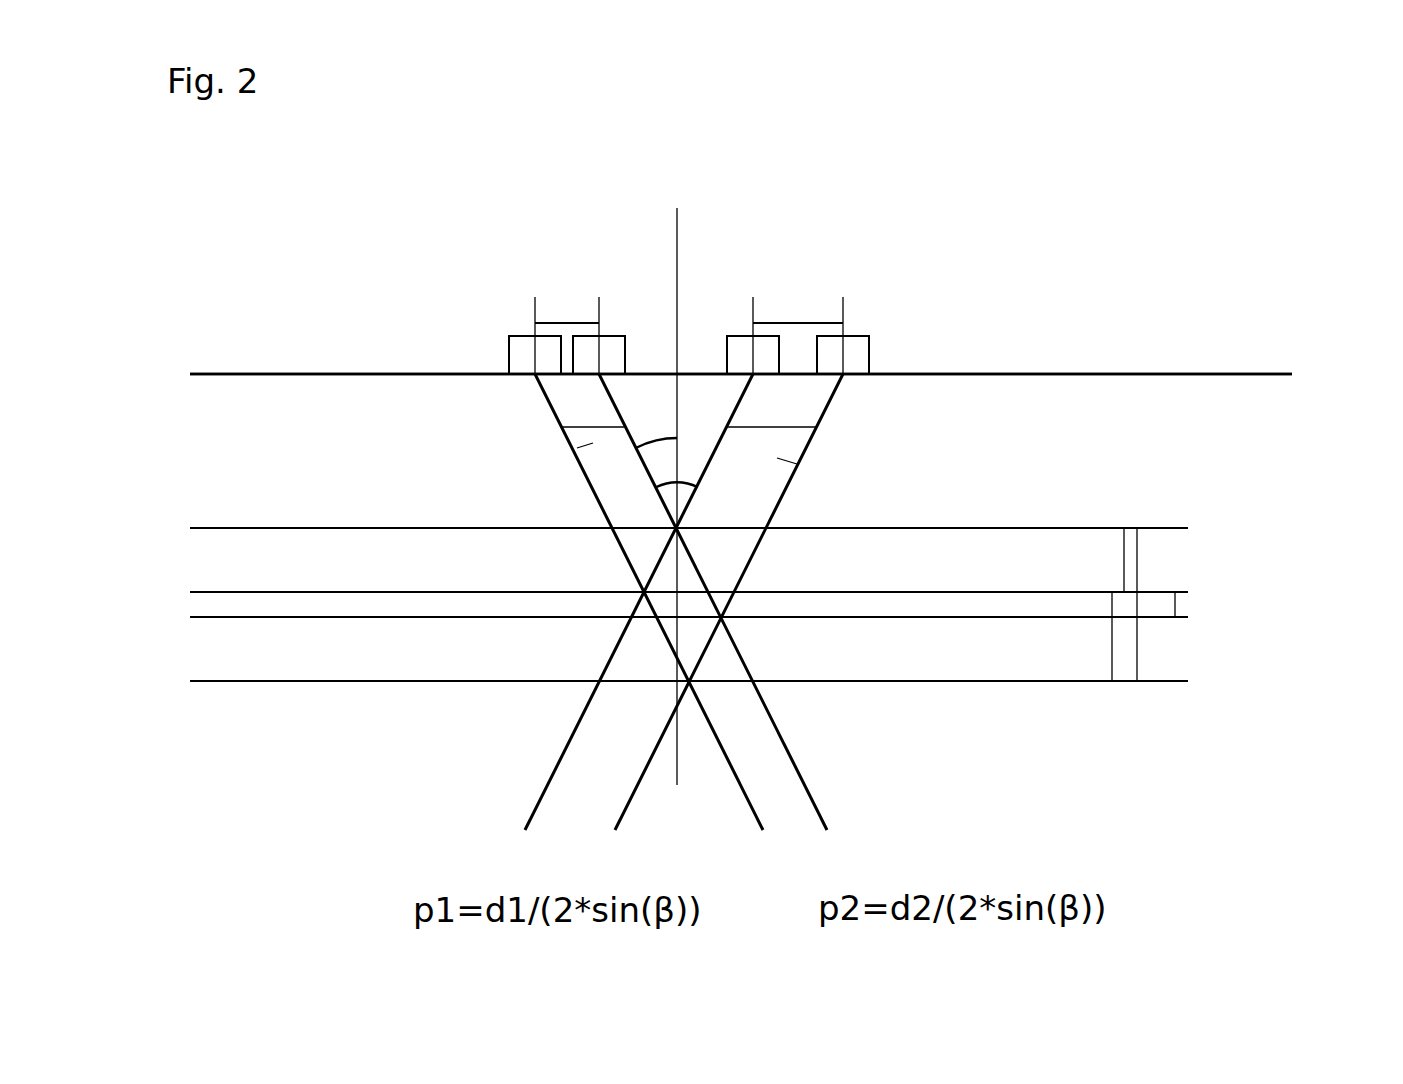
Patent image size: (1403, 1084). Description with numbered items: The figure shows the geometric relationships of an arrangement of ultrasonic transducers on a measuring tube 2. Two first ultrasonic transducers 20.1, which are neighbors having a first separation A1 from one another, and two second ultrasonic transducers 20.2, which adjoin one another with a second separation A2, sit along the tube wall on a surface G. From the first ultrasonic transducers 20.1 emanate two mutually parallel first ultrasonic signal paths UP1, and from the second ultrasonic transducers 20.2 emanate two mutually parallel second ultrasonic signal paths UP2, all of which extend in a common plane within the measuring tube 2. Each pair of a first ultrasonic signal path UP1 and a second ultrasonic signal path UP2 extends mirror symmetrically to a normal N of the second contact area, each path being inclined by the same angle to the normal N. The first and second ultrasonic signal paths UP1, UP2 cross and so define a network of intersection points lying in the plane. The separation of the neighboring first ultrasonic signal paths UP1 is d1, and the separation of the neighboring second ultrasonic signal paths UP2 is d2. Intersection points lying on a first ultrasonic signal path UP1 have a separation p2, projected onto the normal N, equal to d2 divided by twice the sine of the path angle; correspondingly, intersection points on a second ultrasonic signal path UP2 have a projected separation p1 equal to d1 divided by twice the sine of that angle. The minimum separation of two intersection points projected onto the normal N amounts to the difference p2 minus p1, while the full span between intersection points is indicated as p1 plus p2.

The measuring tube 2 is at (1266, 374).
The ground / boundary surface G is at (1228, 374).
The normal N is at (677, 233).
The first ultrasonic transducers 20.1 is at (524, 322).
The second ultrasonic transducers 20.2 is at (740, 322).
The first separation A1 is at (567, 327).
The second separation A2 is at (798, 327).
The first ultrasonic signal paths UP1 is at (612, 402).
The second ultrasonic signal paths UP2 is at (740, 400).
The separation of neighboring first ultrasonic signal paths d1 is at (622, 427).
The separation of neighboring second ultrasonic signal paths d2 is at (732, 432).
The separation of intersection points on a second ultrasonic signal path p1 is at (673, 565).
The separation of intersection points on a first ultrasonic signal path p2 is at (677, 605).